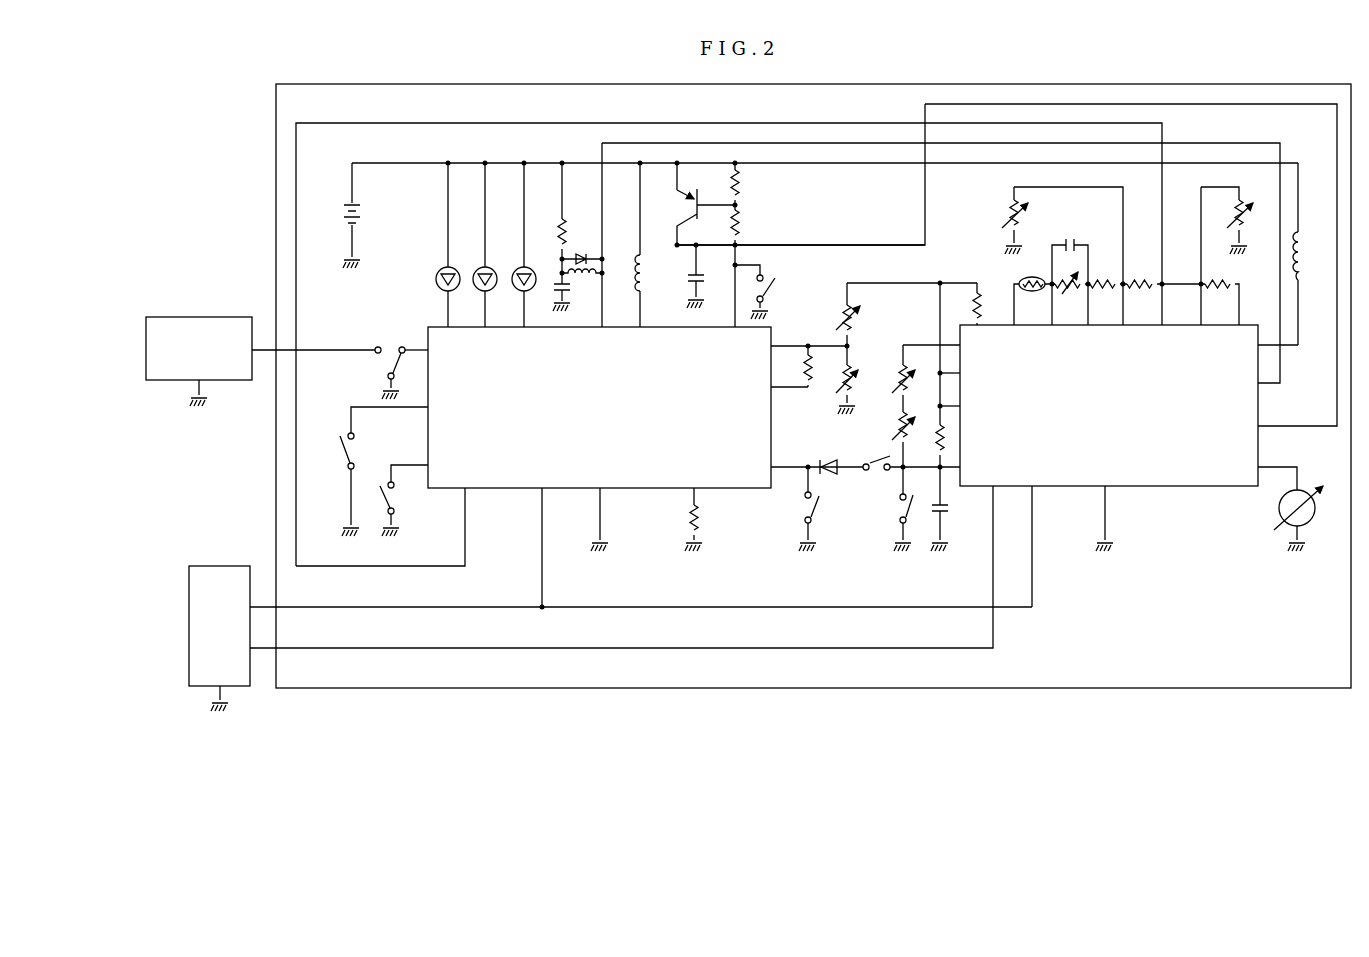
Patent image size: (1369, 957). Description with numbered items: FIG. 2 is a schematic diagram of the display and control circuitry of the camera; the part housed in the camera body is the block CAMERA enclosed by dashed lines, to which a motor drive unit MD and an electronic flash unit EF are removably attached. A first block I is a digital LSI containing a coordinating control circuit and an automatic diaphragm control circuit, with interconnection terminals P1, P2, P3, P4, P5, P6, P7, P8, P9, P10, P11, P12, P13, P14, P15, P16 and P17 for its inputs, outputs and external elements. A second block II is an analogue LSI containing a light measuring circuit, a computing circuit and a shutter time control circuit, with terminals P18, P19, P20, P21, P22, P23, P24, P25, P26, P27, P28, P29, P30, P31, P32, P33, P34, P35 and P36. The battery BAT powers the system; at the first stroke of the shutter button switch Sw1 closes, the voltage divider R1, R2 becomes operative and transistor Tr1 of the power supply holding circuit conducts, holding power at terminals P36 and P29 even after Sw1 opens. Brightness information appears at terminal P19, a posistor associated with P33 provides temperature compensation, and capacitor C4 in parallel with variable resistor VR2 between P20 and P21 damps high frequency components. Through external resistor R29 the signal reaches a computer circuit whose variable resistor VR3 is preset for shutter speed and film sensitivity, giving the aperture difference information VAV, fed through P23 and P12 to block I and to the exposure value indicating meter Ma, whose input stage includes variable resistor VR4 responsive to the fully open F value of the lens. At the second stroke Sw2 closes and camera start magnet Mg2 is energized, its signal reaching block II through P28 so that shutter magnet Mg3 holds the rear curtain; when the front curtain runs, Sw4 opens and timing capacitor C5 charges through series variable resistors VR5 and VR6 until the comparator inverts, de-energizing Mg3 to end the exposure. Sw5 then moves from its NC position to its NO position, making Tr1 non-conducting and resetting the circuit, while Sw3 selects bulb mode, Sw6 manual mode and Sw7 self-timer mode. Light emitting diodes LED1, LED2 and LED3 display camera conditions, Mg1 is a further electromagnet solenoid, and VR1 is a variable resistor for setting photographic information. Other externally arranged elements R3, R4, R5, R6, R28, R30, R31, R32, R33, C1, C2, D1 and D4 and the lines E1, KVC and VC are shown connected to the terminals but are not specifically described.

The camera body block CAMERA is at (813, 386).
The aperture difference information VAV is at (729, 333).
The voltage node E1 is at (801, 230).
The battery BAT is at (372, 215).
The light emitting diode LED1 is at (464, 245).
The light emitting diode LED2 is at (501, 245).
The light emitting diode LED3 is at (540, 245).
The resistor R4 is at (551, 218).
The diode D1 is at (582, 248).
The camera start magnet Mg2 is at (584, 279).
The capacitor C2 is at (573, 292).
The electromagnet solenoid Mg1 is at (658, 245).
The transistor Tr1 is at (690, 204).
The voltage divider resistor R1 is at (746, 184).
The voltage divider resistor R2 is at (746, 266).
The capacitor C1 is at (706, 276).
The first switch Sw1 is at (771, 292).
The first block I is at (599, 407).
The second block II is at (1109, 405).
The interconnection terminal P1 is at (697, 473).
The interconnection terminal P2 is at (779, 385).
The interconnection terminal P3 is at (798, 349).
The interconnection terminal P4 is at (642, 341).
The interconnection terminal P5 is at (602, 507).
The interconnection terminal P6 is at (602, 341).
The interconnection terminal P7 is at (525, 341).
The interconnection terminal P8 is at (488, 341).
The interconnection terminal P9 is at (450, 341).
The interconnection terminal P10 is at (405, 414).
The interconnection terminal P11 is at (549, 535).
The interconnection terminal P12 is at (472, 473).
The interconnection terminal P13 is at (425, 469).
The interconnection terminal P14 is at (736, 341).
The interconnection terminal P15 is at (802, 467).
The interconnection terminal P16 is at (446, 365).
The interconnection terminal P17 is at (680, 341).
The interconnection terminal P18 is at (989, 339).
The interconnection terminal P19 is at (1019, 317).
The interconnection terminal P20 is at (1056, 317).
The interconnection terminal P21 is at (1092, 317).
The interconnection terminal P22 is at (1127, 317).
The interconnection terminal P23 is at (1166, 339).
The interconnection terminal P24 is at (1205, 268).
The interconnection terminal P25 is at (1264, 339).
The interconnection terminal P26 is at (1263, 473).
The interconnection terminal P27 is at (1244, 361).
The interconnection terminal P28 is at (1244, 383).
The interconnection terminal P29 is at (1110, 505).
The interconnection terminal P30 is at (940, 466).
The interconnection terminal P31 is at (966, 405).
The interconnection terminal P32 is at (947, 350).
The interconnection terminal P33 is at (966, 371).
The interconnection terminal P34 is at (1036, 533).
The interconnection terminal P35 is at (632, 555).
The interconnection terminal P36 is at (1242, 426).
The resistor R5 is at (820, 366).
The variable resistor VR1 is at (861, 380).
The constant voltage line KVC is at (912, 270).
The variable resistor R6 is at (856, 314).
The resistor R28 is at (991, 304).
The resistor R32 is at (927, 446).
The timing capacitor C5 is at (949, 509).
The variable resistor VR5 is at (917, 378).
The variable resistor VR6 is at (890, 439).
The switch Sw4 is at (892, 509).
The switch Sw3 is at (879, 477).
The diode D4 is at (828, 454).
The switch Sw2 is at (824, 509).
The resistor R3 is at (703, 519).
The constant voltage line VC is at (641, 594).
The photoresistor R33 is at (1035, 298).
The variable resistor VR2 is at (1070, 295).
The external resistor R29 is at (1105, 299).
The resistor R30 is at (1142, 299).
The resistor R31 is at (1222, 302).
The capacitor C4 is at (1070, 250).
The variable resistor VR3 is at (1044, 235).
The external variable resistor VR4 is at (1227, 220).
The shutter magnet Mg3 is at (1315, 254).
The exposure value indicating meter Ma is at (1308, 518).
The motor drive unit MD is at (260, 361).
The NO position NO is at (368, 338).
The NC position NC is at (411, 338).
The switch Sw5 is at (375, 376).
The switch Sw6 is at (365, 484).
The switch Sw7 is at (404, 509).
The electronic flash unit EF is at (219, 638).